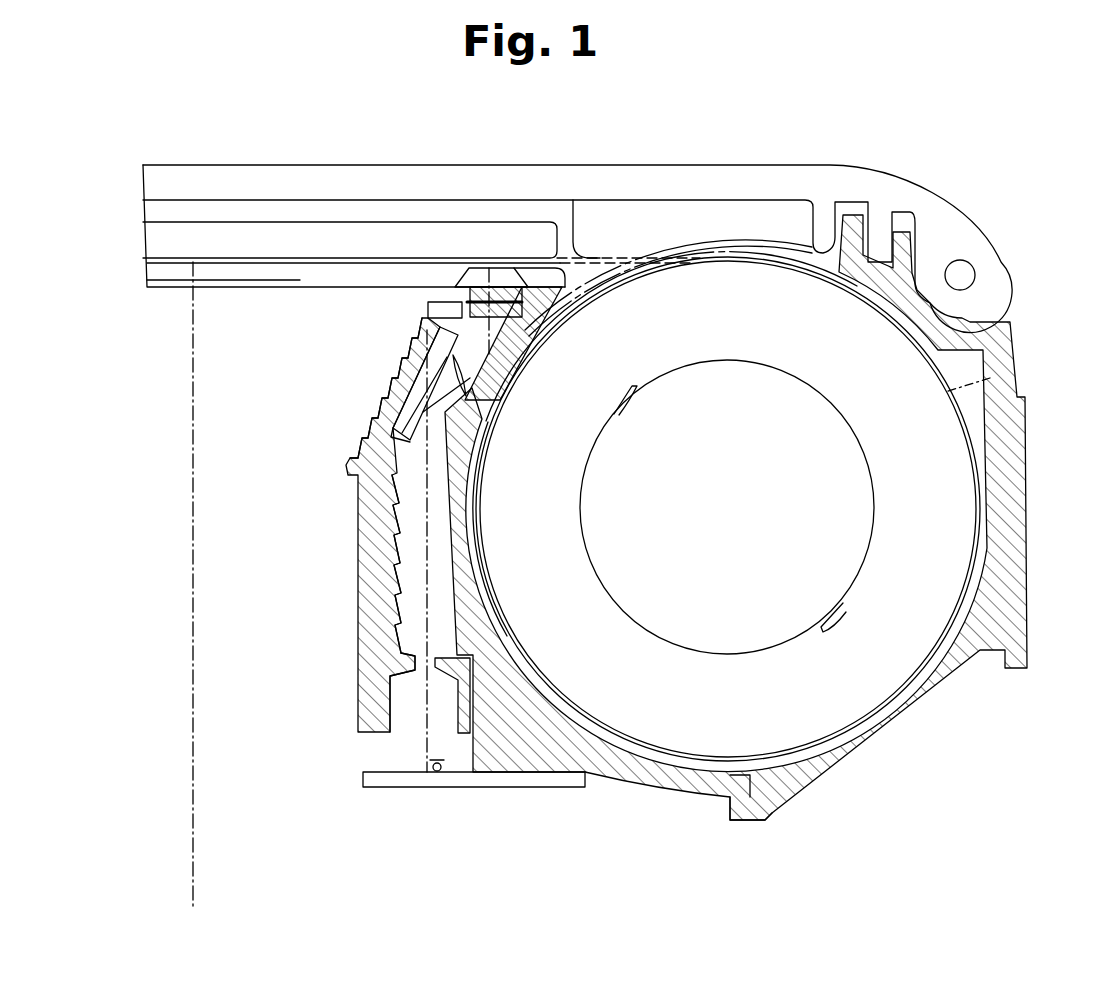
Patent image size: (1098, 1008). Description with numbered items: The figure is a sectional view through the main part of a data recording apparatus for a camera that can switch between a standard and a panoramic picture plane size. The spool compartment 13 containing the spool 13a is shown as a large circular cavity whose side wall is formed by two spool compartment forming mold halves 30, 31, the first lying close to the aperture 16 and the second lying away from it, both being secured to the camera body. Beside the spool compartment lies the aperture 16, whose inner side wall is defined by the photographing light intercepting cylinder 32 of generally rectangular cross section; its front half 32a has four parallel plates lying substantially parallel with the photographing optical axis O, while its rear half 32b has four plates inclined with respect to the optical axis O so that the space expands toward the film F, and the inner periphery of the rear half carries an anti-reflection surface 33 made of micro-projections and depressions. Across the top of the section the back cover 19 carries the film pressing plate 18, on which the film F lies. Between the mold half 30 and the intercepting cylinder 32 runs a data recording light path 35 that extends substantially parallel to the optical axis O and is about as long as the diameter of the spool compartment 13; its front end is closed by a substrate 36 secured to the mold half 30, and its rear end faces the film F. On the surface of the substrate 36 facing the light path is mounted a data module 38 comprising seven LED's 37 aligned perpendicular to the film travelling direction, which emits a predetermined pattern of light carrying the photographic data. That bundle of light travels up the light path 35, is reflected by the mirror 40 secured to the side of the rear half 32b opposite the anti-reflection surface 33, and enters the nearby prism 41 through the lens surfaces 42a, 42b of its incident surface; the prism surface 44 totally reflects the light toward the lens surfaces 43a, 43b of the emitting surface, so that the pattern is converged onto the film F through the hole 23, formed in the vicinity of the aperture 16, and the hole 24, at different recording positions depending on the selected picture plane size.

The spool compartment 13 is at (908, 630).
The spool 13a is at (842, 520).
The aperture 16 is at (317, 307).
The film pressing plate 18 is at (428, 233).
The back cover 19 is at (707, 175).
The hole 23 is at (486, 266).
The hole 24 is at (494, 302).
The spool compartment forming mold half 30 is at (630, 768).
The spool compartment forming mold half 31 is at (833, 780).
The photographing light intercepting cylinder 32 is at (358, 603).
The front half 32a is at (373, 650).
The rear half 32b is at (400, 362).
The anti-reflection surface 33 is at (385, 405).
The data recording light path 35 is at (410, 553).
The substrate 36 is at (505, 782).
The LED 37 is at (437, 774).
The data module 38 is at (412, 758).
The mirror 40 is at (395, 385).
The prism 41 is at (428, 318).
The lens surface 42a is at (468, 414).
The lens surface 42b is at (490, 529).
The lens surface 43a is at (518, 316).
The lens surface 43b is at (513, 343).
The prism surface 44 is at (512, 335).
The photographing optical axis O is at (200, 812).
The film F is at (990, 378).